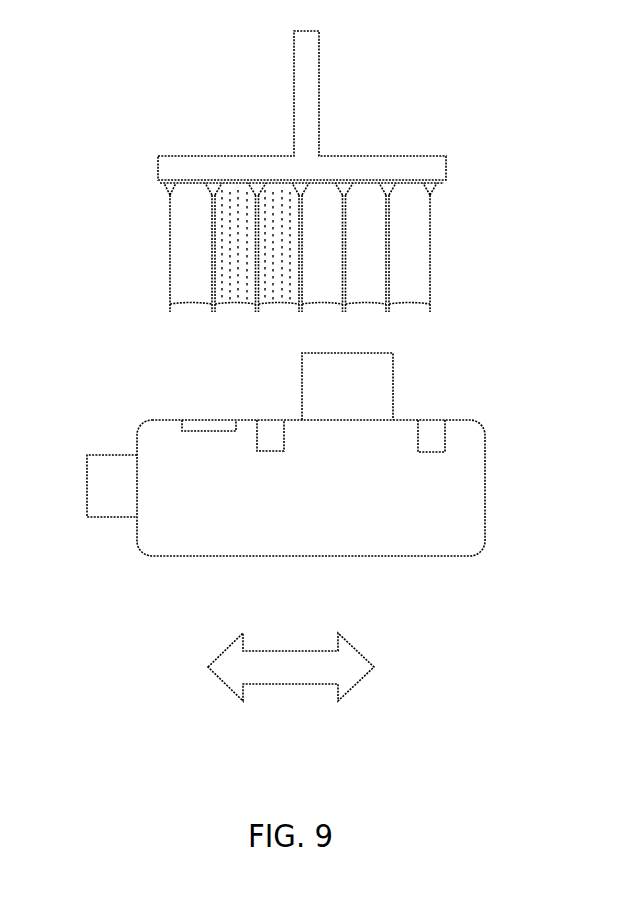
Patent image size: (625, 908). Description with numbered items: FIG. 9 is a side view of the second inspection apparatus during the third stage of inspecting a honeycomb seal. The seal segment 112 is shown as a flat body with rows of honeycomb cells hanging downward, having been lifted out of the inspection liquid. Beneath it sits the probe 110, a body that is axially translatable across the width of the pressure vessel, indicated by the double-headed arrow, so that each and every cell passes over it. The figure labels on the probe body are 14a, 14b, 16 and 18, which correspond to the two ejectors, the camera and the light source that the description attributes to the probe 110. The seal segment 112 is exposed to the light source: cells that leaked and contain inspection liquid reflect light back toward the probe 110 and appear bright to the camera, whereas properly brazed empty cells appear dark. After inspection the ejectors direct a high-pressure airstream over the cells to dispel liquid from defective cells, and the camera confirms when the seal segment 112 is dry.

The probe 110 is at (106, 437).
The seal segment 112 is at (148, 168).
The first slot 14a is at (271, 440).
The second slot 14b is at (432, 442).
The protruding block 16 is at (353, 410).
The recess 18 is at (209, 427).